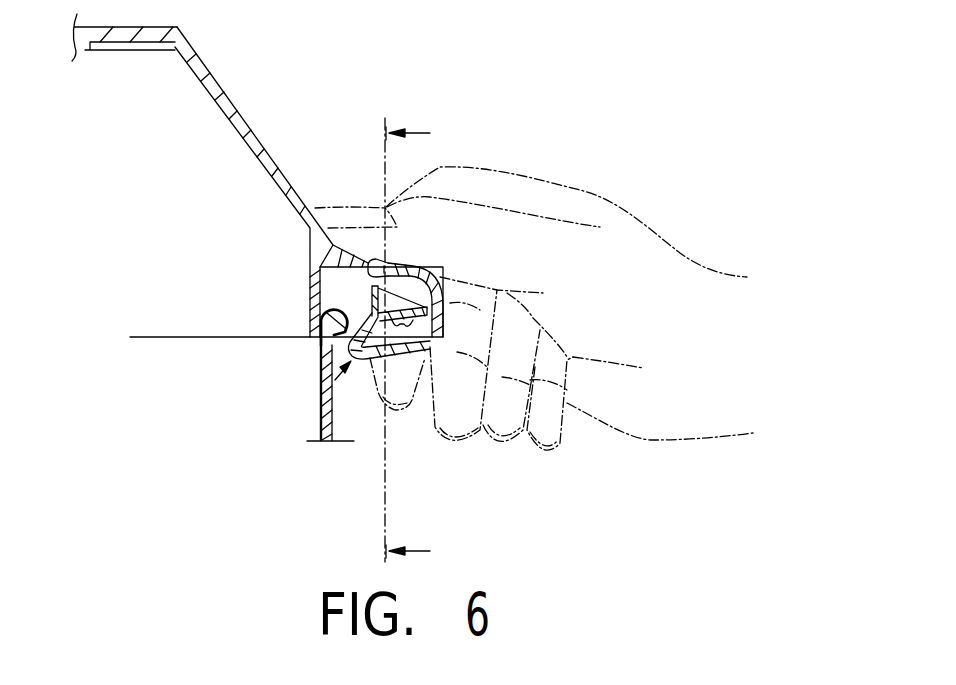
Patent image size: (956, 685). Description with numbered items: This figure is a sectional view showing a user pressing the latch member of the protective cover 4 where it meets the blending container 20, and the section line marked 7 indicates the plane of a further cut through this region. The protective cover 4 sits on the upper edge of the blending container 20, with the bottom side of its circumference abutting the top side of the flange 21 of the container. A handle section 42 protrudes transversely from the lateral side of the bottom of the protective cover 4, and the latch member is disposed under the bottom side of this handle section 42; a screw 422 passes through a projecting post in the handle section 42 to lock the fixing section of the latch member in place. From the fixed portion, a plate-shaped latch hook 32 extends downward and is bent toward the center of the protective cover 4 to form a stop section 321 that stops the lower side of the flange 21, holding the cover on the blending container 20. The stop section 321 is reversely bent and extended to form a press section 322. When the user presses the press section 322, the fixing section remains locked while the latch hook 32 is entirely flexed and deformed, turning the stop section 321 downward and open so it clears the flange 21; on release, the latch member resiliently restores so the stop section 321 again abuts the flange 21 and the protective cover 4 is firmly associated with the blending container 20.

The protective cover 4 is at (228, 118).
The blending container 20 is at (345, 425).
The flange 21 is at (325, 308).
The latch hook 32 is at (322, 388).
The stop section 321 is at (358, 330).
The press section 322 is at (393, 360).
The handle section 42 is at (450, 266).
The screw 422 is at (443, 340).
The section line 7- 7 is at (419, 341).